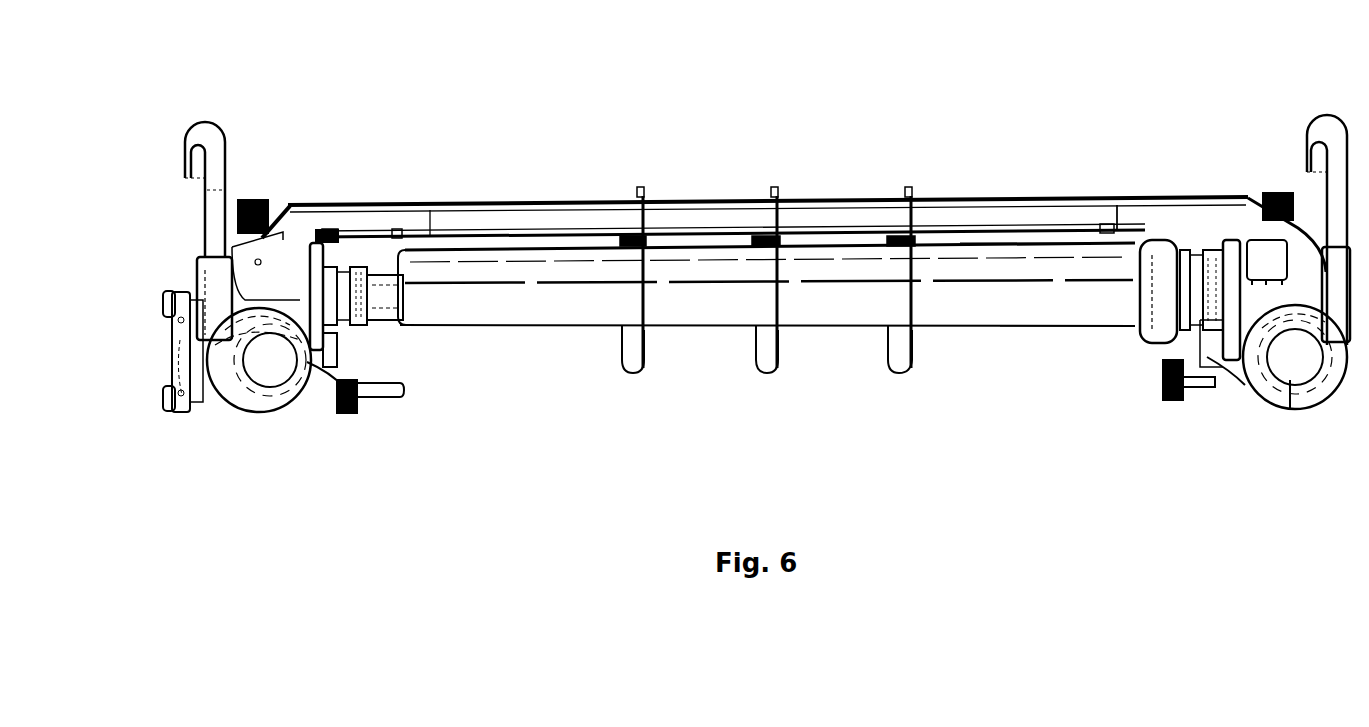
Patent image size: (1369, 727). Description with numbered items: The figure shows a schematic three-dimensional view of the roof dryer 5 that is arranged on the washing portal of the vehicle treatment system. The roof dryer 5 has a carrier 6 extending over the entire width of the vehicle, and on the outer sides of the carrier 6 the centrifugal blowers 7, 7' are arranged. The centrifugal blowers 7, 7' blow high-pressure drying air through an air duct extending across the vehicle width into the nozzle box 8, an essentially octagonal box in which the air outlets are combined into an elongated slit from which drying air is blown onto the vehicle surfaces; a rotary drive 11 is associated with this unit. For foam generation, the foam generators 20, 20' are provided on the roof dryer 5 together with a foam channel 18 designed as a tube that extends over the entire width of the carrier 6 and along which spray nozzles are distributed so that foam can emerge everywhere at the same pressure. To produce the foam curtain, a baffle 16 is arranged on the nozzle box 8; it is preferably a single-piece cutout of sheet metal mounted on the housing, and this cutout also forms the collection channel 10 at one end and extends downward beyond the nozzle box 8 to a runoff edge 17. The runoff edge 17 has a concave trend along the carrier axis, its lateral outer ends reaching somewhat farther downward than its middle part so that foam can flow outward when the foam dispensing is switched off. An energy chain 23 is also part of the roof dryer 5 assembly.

The roof dryer 5 is at (1172, 120).
The carrier 6 is at (380, 203).
The centrifugal blower 7 is at (305, 399).
The centrifugal blower 7' is at (1255, 393).
The nozzle box 8 is at (380, 328).
The collection channel 10 is at (1100, 232).
The rotary drive 11 is at (1163, 347).
The baffle 16 is at (536, 313).
The runoff edge 17 is at (575, 330).
The foam channel 18 is at (513, 232).
The foam generator 20 is at (285, 232).
The foam generator 20' is at (1225, 241).
The energy chain 23 is at (197, 137).